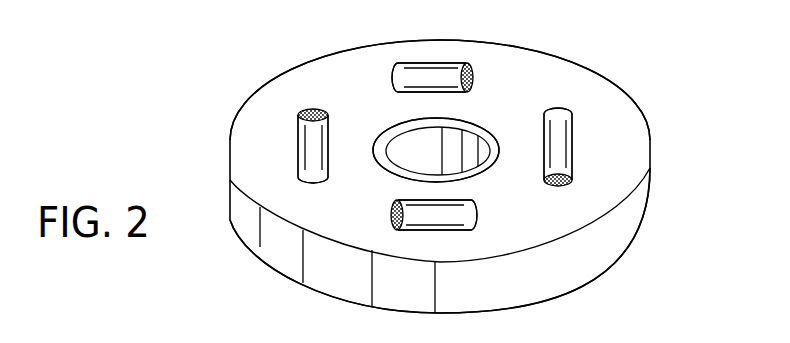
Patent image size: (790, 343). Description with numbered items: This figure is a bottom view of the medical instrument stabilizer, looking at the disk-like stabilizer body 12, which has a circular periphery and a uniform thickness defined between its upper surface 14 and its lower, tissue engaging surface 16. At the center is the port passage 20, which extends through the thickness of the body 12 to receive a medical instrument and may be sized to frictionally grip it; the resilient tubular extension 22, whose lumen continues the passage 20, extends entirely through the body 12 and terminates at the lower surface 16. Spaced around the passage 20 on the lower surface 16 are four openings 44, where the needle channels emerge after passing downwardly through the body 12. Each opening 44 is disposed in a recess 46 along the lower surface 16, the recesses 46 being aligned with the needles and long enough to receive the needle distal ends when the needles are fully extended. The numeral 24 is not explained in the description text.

The stabilizer body 12 is at (256, 89).
The upper surface 14 is at (594, 295).
The lower surface 16 is at (538, 80).
The passage 20 is at (413, 156).
The tubular extension 22 is at (498, 150).
The base 24 is at (97, 334).
The openings 44 is at (314, 104).
The recesses 46 is at (312, 136).